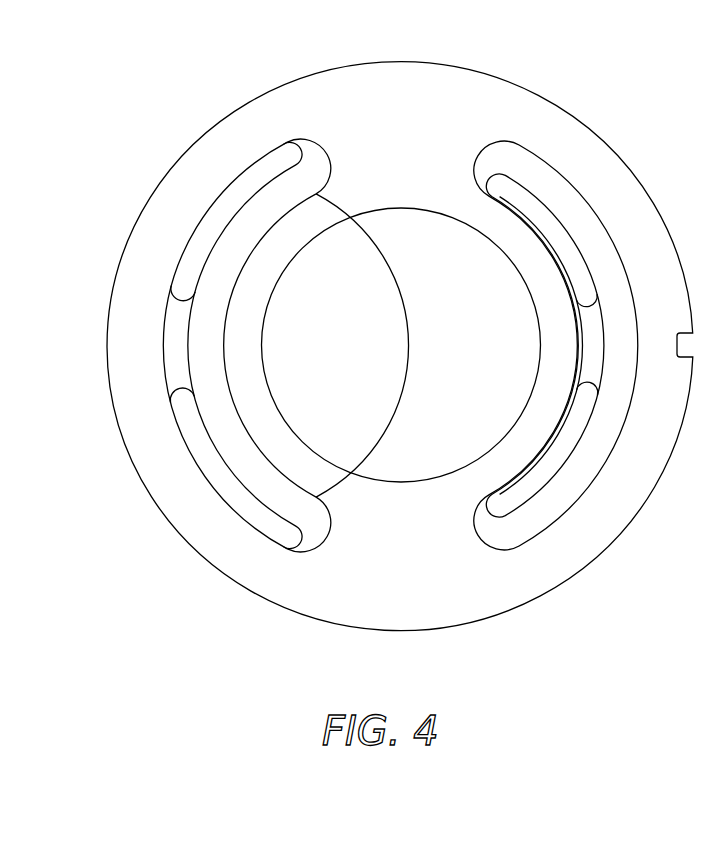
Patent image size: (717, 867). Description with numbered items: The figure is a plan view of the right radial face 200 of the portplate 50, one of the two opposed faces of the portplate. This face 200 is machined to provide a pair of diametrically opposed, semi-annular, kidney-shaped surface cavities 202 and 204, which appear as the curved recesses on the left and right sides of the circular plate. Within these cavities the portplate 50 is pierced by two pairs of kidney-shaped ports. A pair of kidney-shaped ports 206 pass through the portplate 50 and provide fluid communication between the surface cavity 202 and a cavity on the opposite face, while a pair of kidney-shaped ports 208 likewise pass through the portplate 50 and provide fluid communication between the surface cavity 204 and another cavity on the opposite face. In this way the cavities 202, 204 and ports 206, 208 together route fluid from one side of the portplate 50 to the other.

The portplate 50 is at (557, 105).
The right radial face 200 is at (470, 593).
The surface cavity 202 is at (233, 412).
The surface cavity 204 is at (606, 459).
The kidney-shaped port 206 is at (178, 264).
The kidney-shaped port 208 is at (574, 398).